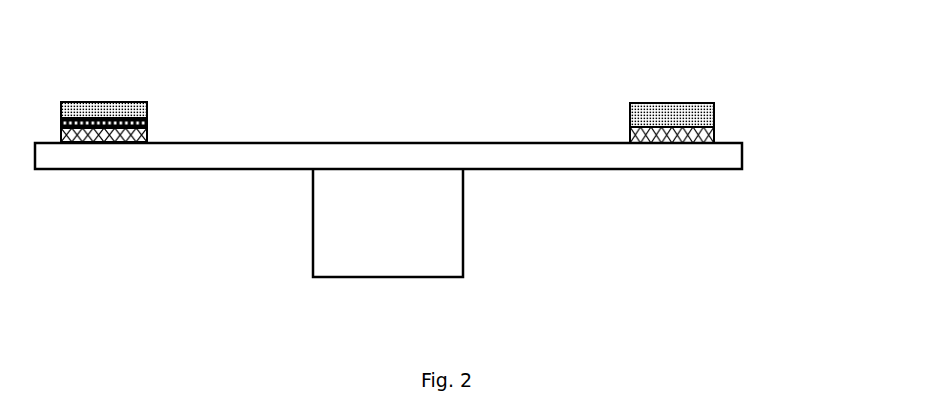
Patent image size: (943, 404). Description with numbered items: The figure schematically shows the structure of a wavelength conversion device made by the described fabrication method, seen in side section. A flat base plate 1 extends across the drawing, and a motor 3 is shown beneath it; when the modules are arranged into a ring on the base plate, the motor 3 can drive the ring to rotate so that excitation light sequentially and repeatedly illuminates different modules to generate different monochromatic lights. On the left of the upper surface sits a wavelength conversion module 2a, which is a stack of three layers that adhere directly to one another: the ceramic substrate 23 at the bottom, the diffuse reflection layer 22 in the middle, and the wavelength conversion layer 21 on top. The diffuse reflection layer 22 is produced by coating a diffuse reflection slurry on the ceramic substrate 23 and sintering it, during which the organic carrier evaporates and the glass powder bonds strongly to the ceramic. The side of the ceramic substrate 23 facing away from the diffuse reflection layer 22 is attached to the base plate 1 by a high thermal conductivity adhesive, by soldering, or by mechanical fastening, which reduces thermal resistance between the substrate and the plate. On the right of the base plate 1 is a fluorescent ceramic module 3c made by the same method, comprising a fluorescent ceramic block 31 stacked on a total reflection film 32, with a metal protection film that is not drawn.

The base plate 1 is at (580, 158).
The motor 3 is at (418, 262).
The wavelength conversion module 2a is at (177, 80).
The wavelength conversion layer 21 is at (101, 111).
The diffuse reflection layer 22 is at (148, 122).
The ceramic substrate 23 is at (142, 115).
The fluorescent ceramic module 3c is at (748, 80).
The fluorescent ceramic block 31 is at (660, 121).
The total reflection film 32 is at (713, 108).